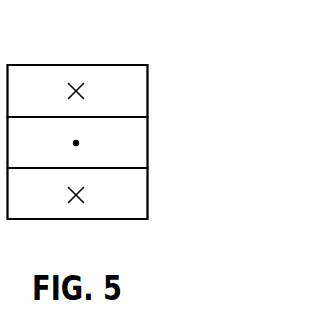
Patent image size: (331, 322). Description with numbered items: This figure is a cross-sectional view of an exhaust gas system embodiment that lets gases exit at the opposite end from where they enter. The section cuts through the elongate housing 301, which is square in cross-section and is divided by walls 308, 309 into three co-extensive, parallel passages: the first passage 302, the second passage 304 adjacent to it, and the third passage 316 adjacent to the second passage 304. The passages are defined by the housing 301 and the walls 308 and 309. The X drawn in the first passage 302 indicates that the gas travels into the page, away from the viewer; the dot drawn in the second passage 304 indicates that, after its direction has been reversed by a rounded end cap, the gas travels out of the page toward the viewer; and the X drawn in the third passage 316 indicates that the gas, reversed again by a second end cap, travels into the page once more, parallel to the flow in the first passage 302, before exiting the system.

The elongate housing 301 is at (50, 65).
The third passage 316 is at (125, 78).
The wall 309 is at (136, 117).
The second passage 304 is at (126, 128).
The wall 308 is at (136, 168).
The first passage 302 is at (125, 208).